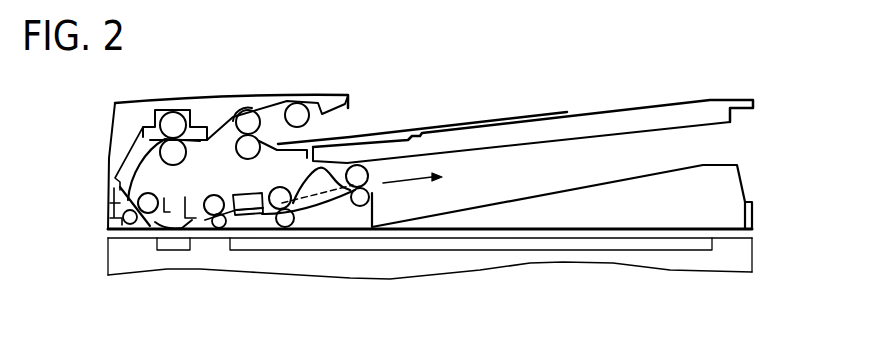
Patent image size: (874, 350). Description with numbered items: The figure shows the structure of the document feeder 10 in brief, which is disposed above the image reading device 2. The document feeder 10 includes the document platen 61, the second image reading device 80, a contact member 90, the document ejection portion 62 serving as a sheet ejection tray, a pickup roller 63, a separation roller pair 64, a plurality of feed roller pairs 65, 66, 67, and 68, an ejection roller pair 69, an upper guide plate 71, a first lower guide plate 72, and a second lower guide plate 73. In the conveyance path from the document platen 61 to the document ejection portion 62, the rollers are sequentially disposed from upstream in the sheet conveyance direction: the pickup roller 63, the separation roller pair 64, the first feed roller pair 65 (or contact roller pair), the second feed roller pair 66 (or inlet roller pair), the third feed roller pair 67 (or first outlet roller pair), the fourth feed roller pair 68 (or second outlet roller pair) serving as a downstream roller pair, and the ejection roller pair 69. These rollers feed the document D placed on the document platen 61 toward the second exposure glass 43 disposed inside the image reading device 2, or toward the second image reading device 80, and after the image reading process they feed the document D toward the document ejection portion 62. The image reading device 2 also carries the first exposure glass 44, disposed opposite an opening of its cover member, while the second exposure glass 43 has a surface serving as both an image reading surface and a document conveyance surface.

The image reading device 2 is at (533, 272).
The document feeder 10 is at (688, 82).
The second exposure glass 43 is at (172, 250).
The first exposure glass 44 is at (478, 252).
The document platen 61 is at (618, 111).
The document ejection portion 62 is at (618, 181).
The pickup roller 63 is at (296, 103).
The separation roller pair 64 is at (247, 110).
The first feed roller pair 65 is at (173, 112).
The second feed roller pair 66 is at (126, 228).
The third feed roller pair 67 is at (216, 230).
The fourth feed roller pair 68 is at (272, 210).
The ejection roller pair 69 is at (368, 182).
The upper guide plate 71 is at (302, 185).
The first lower guide plate 72 is at (306, 207).
The second lower guide plate 73 is at (338, 205).
The second image reading device 80 is at (242, 193).
The contact member 90 is at (243, 212).
The document D is at (517, 117).